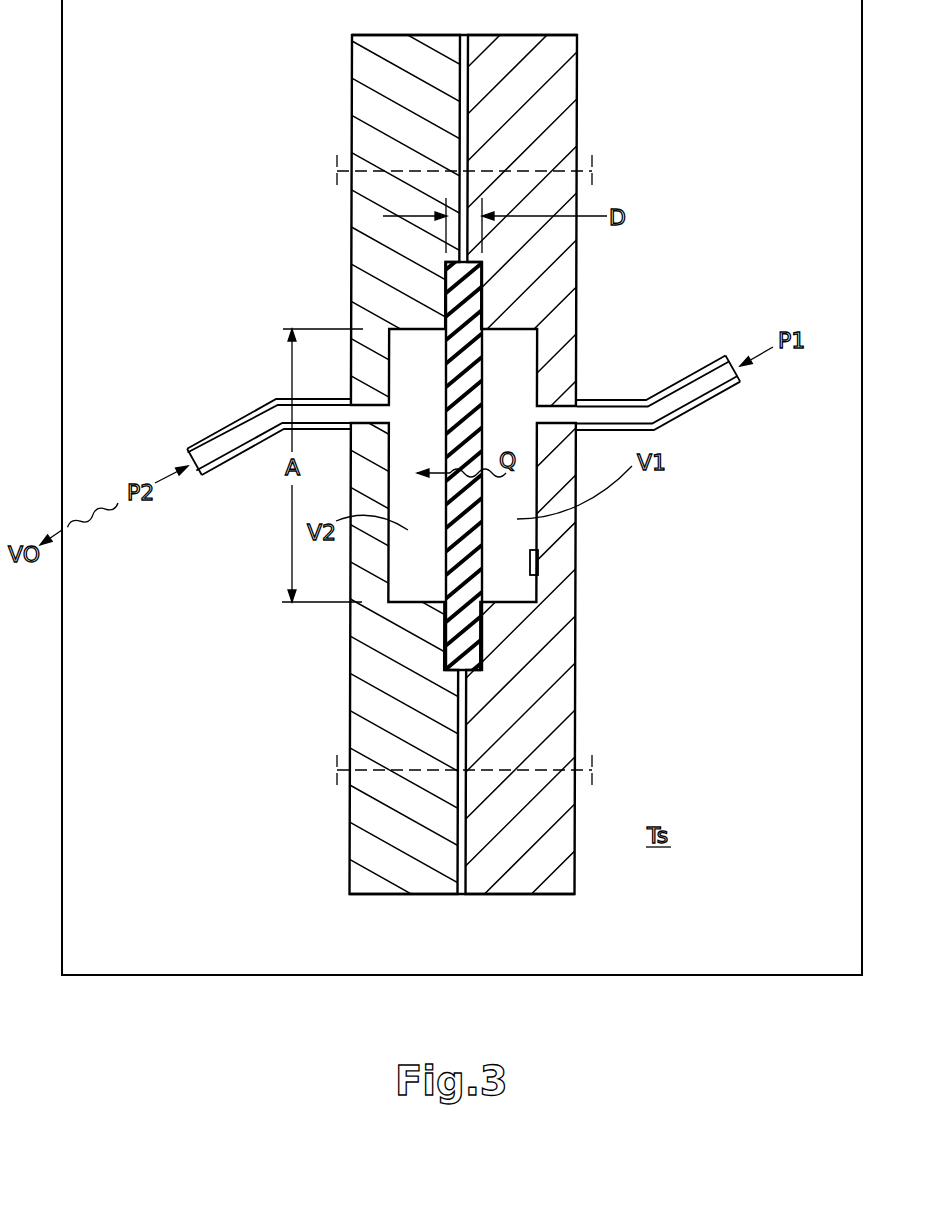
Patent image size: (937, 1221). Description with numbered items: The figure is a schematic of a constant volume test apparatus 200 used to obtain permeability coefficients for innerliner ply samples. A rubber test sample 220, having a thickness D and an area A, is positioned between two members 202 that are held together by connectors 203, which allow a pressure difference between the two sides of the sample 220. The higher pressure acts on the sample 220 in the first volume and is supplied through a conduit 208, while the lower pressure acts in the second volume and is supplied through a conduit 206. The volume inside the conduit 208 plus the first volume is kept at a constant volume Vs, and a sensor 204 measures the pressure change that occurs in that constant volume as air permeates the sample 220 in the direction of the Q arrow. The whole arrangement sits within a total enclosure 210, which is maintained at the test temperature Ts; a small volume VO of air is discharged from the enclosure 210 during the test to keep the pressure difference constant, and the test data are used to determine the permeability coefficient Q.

The constant volume test apparatus 200 is at (498, 527).
The members 202 is at (385, 710).
The connectors 203 is at (402, 170).
The sensor 204 is at (538, 565).
The conduit 206 is at (232, 435).
The conduit 208 is at (677, 405).
The total enclosure 210 is at (632, 978).
The test sample 220 is at (472, 411).